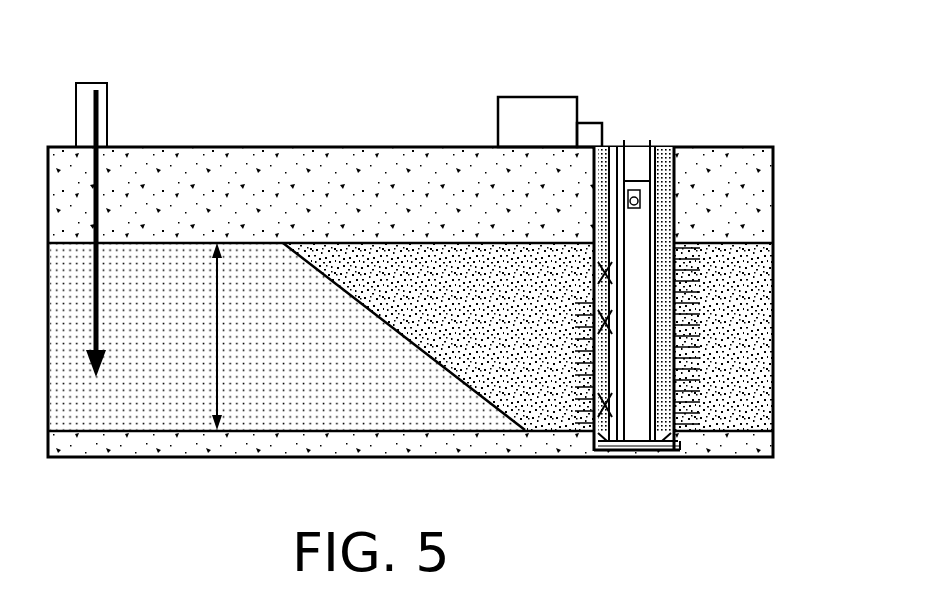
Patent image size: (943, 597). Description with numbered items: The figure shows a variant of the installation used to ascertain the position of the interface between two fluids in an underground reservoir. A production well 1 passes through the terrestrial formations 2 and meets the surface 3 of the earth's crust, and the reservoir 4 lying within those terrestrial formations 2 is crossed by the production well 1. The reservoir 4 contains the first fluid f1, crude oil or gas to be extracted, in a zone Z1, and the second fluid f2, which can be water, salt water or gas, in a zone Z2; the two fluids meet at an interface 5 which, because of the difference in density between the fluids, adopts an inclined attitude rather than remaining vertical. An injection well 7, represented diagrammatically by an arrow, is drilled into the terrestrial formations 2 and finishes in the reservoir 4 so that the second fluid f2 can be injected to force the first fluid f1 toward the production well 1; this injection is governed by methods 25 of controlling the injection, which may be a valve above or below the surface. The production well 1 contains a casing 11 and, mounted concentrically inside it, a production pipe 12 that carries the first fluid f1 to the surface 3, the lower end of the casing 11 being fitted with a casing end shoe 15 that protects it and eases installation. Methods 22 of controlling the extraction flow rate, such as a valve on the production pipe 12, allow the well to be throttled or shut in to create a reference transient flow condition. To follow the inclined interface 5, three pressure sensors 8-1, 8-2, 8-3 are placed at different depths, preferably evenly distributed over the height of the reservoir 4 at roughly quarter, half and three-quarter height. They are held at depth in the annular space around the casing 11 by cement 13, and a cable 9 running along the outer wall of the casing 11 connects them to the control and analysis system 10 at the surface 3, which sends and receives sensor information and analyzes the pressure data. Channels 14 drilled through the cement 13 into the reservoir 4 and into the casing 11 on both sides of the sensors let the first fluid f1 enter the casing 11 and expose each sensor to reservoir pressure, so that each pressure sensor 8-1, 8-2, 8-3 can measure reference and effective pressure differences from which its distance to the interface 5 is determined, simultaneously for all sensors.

The production well 1 is at (680, 205).
The terrestrial formations 2 is at (757, 178).
The surface 3 is at (748, 148).
The reservoir 4 is at (752, 412).
The interface 5 is at (300, 276).
The injection well 7 is at (97, 117).
The pressure sensor 8-1 is at (597, 260).
The pressure sensor 8-2 is at (628, 445).
The pressure sensor 8-3 is at (592, 432).
The cable 9 is at (592, 126).
The control and analysis system 10 is at (527, 105).
The casing 11 is at (660, 240).
The production pipe 12 is at (631, 175).
The cement 13 is at (665, 162).
The channels 14 is at (700, 347).
The casing end shoe 15 is at (667, 452).
The methods of controlling the extraction flow rate 22 is at (635, 188).
The methods for controlling the injection 25 is at (86, 93).
The first fluid f1 is at (757, 292).
The second fluid f2 is at (150, 417).
The zone Z1 is at (525, 420).
The zone Z2 is at (273, 417).